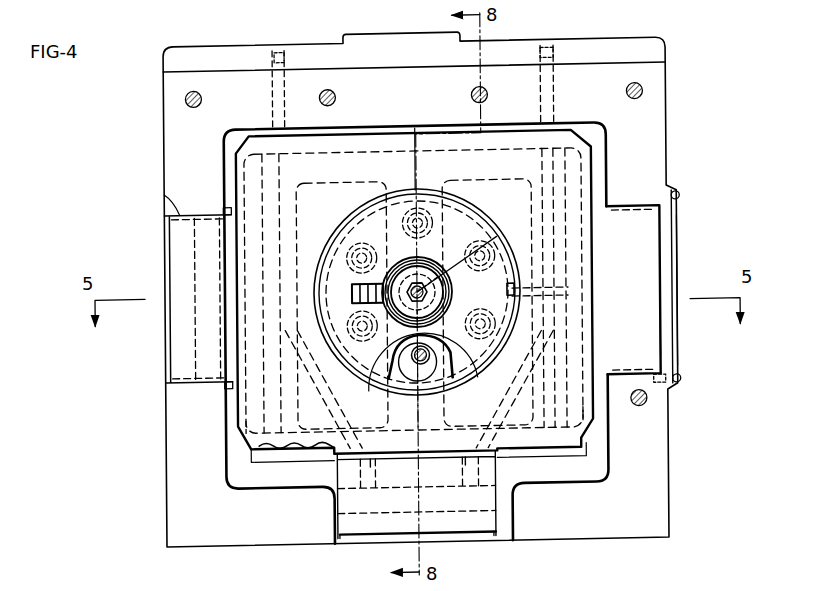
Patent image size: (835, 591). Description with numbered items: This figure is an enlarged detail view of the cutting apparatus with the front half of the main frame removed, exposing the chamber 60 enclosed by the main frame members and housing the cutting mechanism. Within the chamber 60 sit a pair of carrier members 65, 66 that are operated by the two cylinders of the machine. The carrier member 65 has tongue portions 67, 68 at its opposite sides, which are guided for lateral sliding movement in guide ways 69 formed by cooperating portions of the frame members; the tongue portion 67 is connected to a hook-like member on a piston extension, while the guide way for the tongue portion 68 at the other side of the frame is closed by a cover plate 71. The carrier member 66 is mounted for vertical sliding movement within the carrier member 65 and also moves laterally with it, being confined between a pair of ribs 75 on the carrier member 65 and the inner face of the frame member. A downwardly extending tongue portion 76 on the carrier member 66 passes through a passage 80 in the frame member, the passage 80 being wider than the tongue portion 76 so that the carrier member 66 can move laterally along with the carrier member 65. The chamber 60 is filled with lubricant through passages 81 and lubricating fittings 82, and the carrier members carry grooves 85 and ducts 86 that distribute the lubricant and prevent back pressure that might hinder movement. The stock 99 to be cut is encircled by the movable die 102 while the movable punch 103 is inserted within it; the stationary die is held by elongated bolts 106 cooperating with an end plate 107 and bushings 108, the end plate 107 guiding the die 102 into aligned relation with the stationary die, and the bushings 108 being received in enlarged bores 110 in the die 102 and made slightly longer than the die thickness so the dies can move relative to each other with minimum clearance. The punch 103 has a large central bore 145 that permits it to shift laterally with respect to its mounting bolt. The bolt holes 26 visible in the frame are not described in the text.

The bolt holes 26 is at (185, 100).
The chamber 60 is at (599, 143).
The carrier member 65 is at (238, 182).
The carrier member 66 is at (548, 457).
The tongue portion 67 is at (177, 258).
The tongue portion 68 is at (643, 243).
The guide ways 69 is at (175, 208).
The cover plate 71 is at (678, 311).
The ribs 75 is at (245, 422).
The tongue portion 76 is at (470, 526).
The passage 80 is at (335, 539).
The passages 81 is at (272, 95).
The lubricating fittings 82 is at (277, 53).
The grooves 85 is at (283, 167).
The ducts 86 is at (342, 416).
The stock 99 is at (453, 291).
The movable die 102 is at (352, 222).
The movable punch 103 is at (402, 263).
The elongated bolts 106 is at (454, 370).
The end plate 107 is at (358, 233).
The bushings 108 is at (395, 372).
The enlarged bores 110 is at (423, 370).
The central bore 145 is at (427, 270).